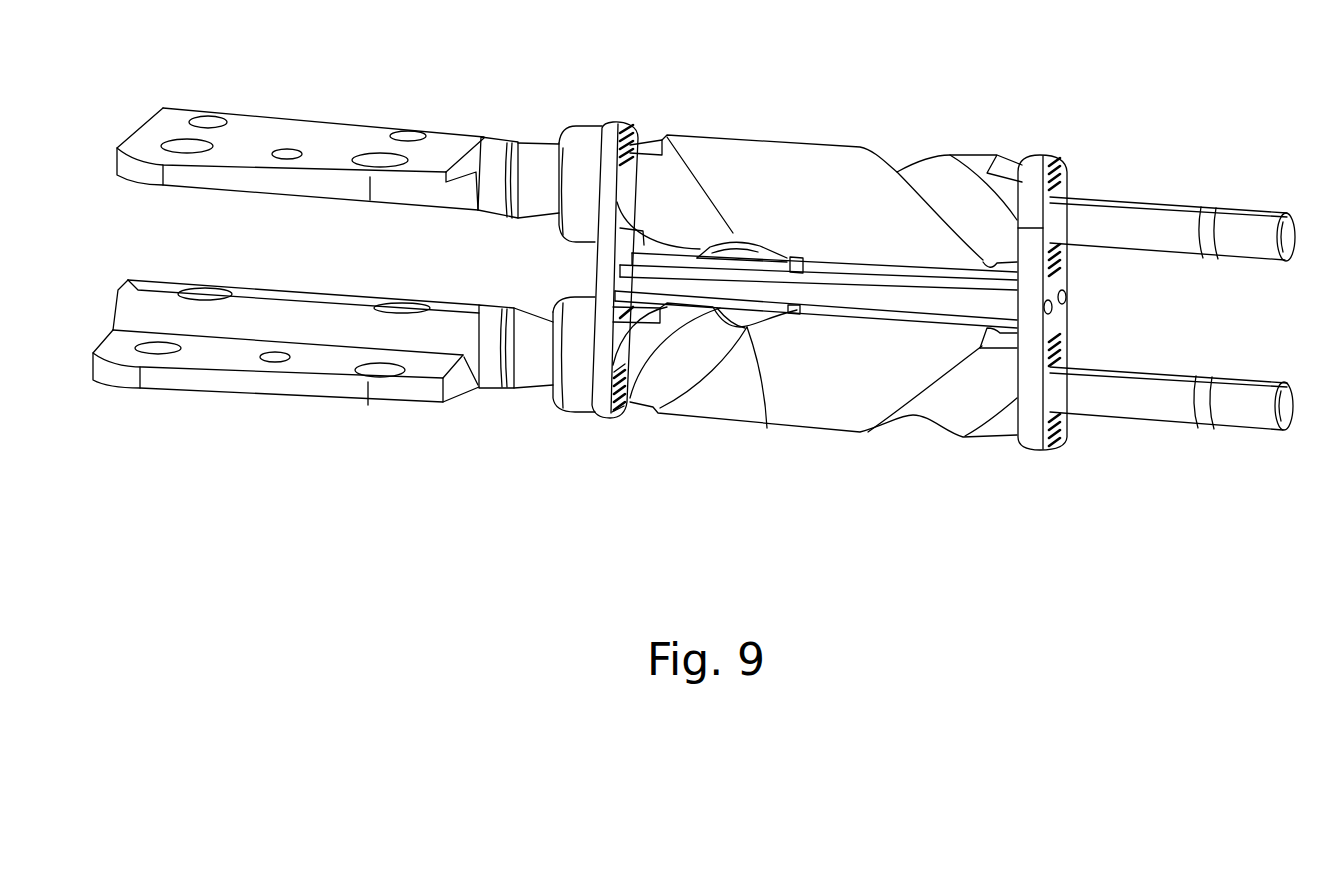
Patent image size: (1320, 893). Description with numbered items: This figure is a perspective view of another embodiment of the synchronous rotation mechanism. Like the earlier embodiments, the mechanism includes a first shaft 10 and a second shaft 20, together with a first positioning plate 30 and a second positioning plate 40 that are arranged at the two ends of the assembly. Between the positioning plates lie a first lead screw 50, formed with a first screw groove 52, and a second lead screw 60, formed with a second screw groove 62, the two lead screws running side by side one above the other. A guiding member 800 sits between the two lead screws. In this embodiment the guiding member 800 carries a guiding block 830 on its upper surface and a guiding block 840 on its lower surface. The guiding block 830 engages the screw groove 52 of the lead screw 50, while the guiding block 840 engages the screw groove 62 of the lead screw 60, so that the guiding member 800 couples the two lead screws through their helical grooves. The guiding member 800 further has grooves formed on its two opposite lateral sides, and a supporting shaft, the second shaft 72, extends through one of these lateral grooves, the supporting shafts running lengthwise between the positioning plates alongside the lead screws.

The first shaft 10 is at (1118, 217).
The second shaft 20 is at (1131, 397).
The first positioning plate 30 is at (617, 134).
The second positioning plate 40 is at (1036, 158).
The first lead screw 50 is at (762, 155).
The first screw groove 52 is at (933, 185).
The second lead screw 60 is at (825, 387).
The second screw groove 62 is at (690, 357).
The second shaft 72 is at (910, 302).
The guiding member 800 is at (630, 398).
The guiding block 830 is at (733, 232).
The guiding block 840 is at (748, 330).